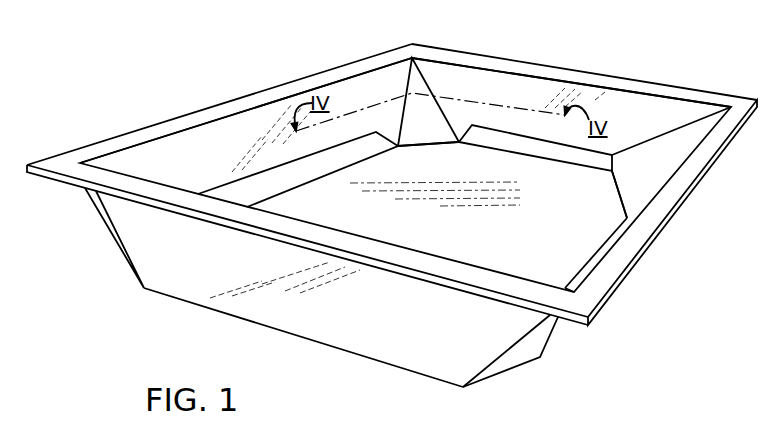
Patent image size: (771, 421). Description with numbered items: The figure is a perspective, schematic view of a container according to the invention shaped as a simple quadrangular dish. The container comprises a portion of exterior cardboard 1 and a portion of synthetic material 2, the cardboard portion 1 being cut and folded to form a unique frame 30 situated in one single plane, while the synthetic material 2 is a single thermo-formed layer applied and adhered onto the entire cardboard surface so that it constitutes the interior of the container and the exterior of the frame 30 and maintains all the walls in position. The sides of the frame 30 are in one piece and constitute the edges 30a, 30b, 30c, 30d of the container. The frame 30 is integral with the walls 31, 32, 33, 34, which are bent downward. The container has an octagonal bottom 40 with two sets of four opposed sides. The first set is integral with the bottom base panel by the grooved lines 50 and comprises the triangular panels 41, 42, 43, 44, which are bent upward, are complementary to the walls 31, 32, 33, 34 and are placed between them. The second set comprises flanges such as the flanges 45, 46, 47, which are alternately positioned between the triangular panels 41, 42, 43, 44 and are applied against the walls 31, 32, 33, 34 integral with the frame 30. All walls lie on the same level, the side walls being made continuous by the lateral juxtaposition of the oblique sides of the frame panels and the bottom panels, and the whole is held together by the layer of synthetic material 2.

The exterior cardboard portion 1 is at (197, 282).
The synthetic material layer 2 is at (445, 165).
The frame 30 is at (181, 118).
The edge 30a is at (250, 92).
The edge 30b is at (592, 72).
The edge 30c is at (642, 249).
The edge 30d is at (118, 172).
The wall panel 31 is at (143, 162).
The wall panel 32 is at (571, 98).
The wall panel 33 is at (637, 215).
The wall panel 34 is at (347, 324).
The bottom 40 is at (435, 182).
The triangular panel 41 is at (421, 116).
The triangular panel 42 is at (671, 162).
The triangular panel 43 is at (521, 356).
The triangular panel 44 is at (124, 256).
The flange 45 is at (258, 173).
The flange 46 is at (538, 148).
The flange 47 is at (575, 262).
The grooved lines 50 is at (416, 147).